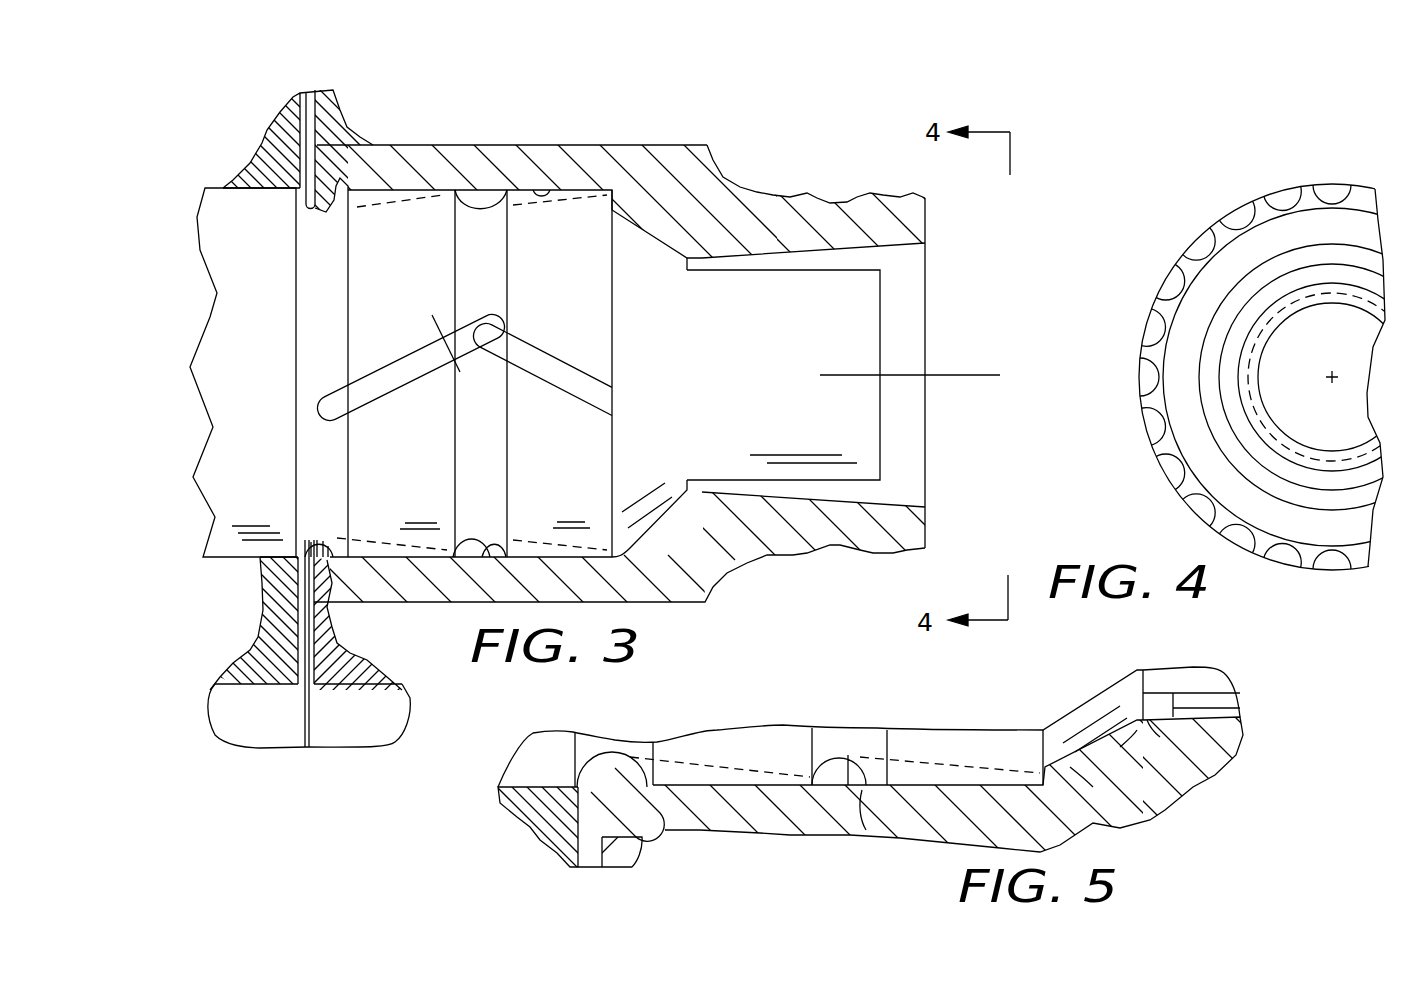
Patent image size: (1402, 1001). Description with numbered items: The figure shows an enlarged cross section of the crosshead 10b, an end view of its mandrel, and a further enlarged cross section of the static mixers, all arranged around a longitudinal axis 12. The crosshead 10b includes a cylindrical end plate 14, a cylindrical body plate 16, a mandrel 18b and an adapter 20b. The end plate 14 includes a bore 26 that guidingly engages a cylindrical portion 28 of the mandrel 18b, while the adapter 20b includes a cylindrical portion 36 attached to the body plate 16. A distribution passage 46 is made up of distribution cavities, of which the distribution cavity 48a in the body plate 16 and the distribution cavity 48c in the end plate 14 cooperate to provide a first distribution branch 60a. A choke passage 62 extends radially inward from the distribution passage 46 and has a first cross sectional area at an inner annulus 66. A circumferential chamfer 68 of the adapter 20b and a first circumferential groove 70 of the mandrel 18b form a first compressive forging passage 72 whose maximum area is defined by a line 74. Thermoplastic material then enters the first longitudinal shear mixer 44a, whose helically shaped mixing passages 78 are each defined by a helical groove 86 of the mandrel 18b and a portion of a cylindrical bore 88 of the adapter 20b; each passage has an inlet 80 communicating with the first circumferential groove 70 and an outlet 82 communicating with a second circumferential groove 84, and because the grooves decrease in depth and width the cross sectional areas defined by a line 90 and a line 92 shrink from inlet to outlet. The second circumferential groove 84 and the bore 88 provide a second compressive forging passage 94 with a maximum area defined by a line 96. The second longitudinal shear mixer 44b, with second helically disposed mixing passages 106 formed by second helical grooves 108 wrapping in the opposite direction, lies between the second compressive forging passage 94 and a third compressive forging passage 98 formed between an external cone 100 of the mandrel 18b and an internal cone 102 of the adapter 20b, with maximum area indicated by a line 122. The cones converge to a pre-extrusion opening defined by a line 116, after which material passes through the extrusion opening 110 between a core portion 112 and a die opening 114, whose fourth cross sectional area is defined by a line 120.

In FIG. 3, the crosshead 10b is at (806, 98).
In FIG. 3, the longitudinal axis 12 is at (1003, 360).
In FIG. 4, the longitudinal axis 12 is at (1333, 374).
In FIG. 3, the end plate 14 is at (255, 660).
In FIG. 3, the body plate 16 is at (355, 648).
In FIG. 3, the mandrel 18b is at (278, 286).
In FIG. 4, the mandrel 18b is at (1250, 196).
In FIG. 5, the mandrel 18b is at (1073, 718).
In FIG. 3, the adapter 20b is at (890, 155).
In FIG. 5, the adapter 20b is at (1223, 757).
In FIG. 3, the bore 26 is at (253, 190).
In FIG. 3, the cylindrical portion 28 is at (255, 234).
In FIG. 3, the cylindrical portion 36 is at (623, 145).
In FIG. 3, the first longitudinal shear mixer 44a is at (422, 286).
In FIG. 5, the first longitudinal shear mixer 44a is at (794, 763).
In FIG. 3, the second longitudinal shear mixer 44b is at (575, 264).
In FIG. 5, the second longitudinal shear mixer 44b is at (1018, 767).
In FIG. 3, the distribution passage 46 is at (352, 716).
In FIG. 3, the distribution cavity 48a is at (368, 746).
In FIG. 3, the distribution cavity 48c is at (298, 746).
In FIG. 3, the first distribution branch 60a is at (298, 716).
In FIG. 3, the choke passage 62 is at (302, 624).
In FIG. 3, the inner annulus 66 is at (302, 583).
In FIG. 3, the circumferential chamfer 68 is at (316, 560).
In FIG. 5, the circumferential chamfer 68 is at (642, 837).
In FIG. 3, the first circumferential groove 70 is at (320, 537).
In FIG. 5, the first circumferential groove 70 is at (608, 757).
In FIG. 3, the first compressive forging passage 72 is at (334, 540).
In FIG. 5, the first compressive forging passage 72 is at (625, 777).
In FIG. 5, the line 74 is at (575, 775).
In FIG. 3, the helically shaped mixing passage 78 is at (362, 207).
In FIG. 5, the helically shaped mixing passage 78 is at (703, 772).
In FIG. 3, the inlet 80 is at (367, 180).
In FIG. 3, the outlet 82 is at (480, 188).
In FIG. 3, the second circumferential groove 84 is at (483, 537).
In FIG. 5, the second circumferential groove 84 is at (827, 762).
In FIG. 3, the helical groove 86 is at (403, 383).
In FIG. 3, the cylindrical bore 88 is at (553, 193).
In FIG. 3, the line 90 is at (337, 365).
In FIG. 3, the line 92 is at (432, 316).
In FIG. 3, the second compressive forging passage 94 is at (472, 536).
In FIG. 5, the second compressive forging passage 94 is at (830, 782).
In FIG. 5, the line 96 is at (863, 830).
In FIG. 3, the third compressive forging passage 98 is at (640, 520).
In FIG. 5, the third compressive forging passage 98 is at (1097, 812).
In FIG. 3, the external cone 100 is at (672, 382).
In FIG. 4, the external cone 100 is at (1205, 338).
In FIG. 5, the external cone 100 is at (1117, 700).
In FIG. 5, the internal cone 102 is at (1173, 777).
In FIG. 3, the second helically disposed mixing passage 106 is at (578, 367).
In FIG. 5, the second helically disposed mixing passage 106 is at (913, 763).
In FIG. 3, the second helical groove 108 is at (548, 372).
In FIG. 4, the second helical groove 108 is at (1190, 250).
In FIG. 3, the extrusion opening 110 is at (715, 488).
In FIG. 5, the extrusion opening 110 is at (1237, 688).
In FIG. 3, the core portion 112 is at (764, 396).
In FIG. 4, the core portion 112 is at (1237, 288).
In FIG. 5, the core portion 112 is at (1190, 678).
In FIG. 3, the die opening 114 is at (760, 265).
In FIG. 5, the die opening 114 is at (1240, 708).
In FIG. 5, the line 116 is at (1240, 732).
In FIG. 5, the line 120 is at (1240, 693).
In FIG. 5, the line 122 is at (1160, 820).